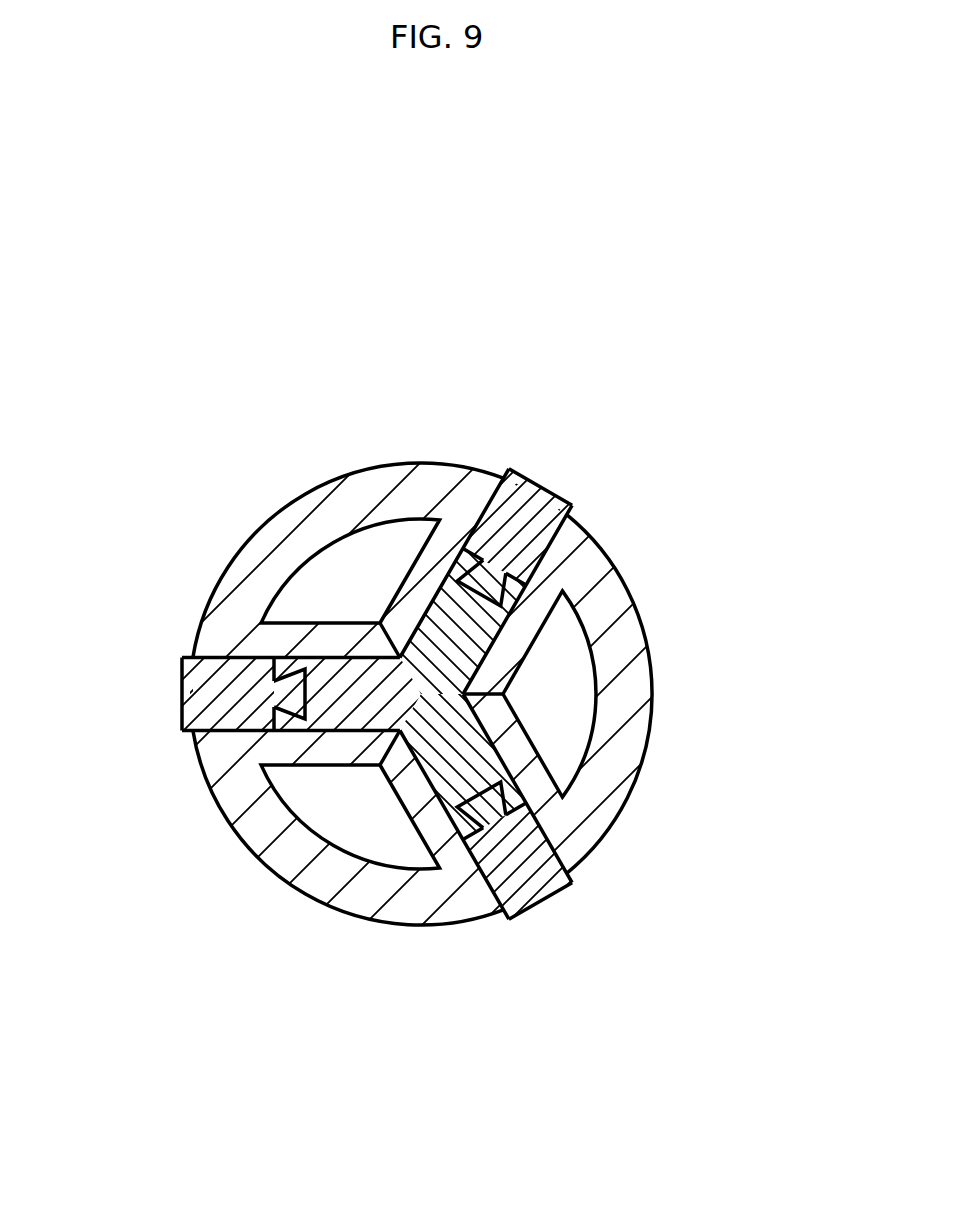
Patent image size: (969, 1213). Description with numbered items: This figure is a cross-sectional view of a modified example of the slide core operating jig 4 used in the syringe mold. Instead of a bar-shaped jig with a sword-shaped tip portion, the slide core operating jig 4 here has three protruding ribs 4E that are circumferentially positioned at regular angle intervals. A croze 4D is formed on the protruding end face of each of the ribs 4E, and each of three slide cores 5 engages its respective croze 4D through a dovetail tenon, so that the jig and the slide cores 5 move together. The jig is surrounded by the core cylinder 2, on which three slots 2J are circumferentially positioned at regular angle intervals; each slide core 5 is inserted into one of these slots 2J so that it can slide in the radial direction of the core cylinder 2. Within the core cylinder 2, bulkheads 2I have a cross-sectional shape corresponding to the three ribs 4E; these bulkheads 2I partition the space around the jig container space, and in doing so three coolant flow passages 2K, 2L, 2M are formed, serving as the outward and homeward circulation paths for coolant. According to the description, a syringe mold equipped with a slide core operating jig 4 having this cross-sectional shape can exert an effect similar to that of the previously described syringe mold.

The core cylinder 2 is at (426, 720).
The bulkhead 2I is at (528, 737).
The slot 2J is at (549, 537).
The coolant flow passage 2K is at (350, 813).
The coolant flow passage 2L is at (562, 693).
The coolant flow passage 2M is at (355, 583).
The slide core operating jig 4 is at (427, 670).
The croze 4D is at (442, 578).
The protruding rib 4E is at (332, 657).
The slide core 5 is at (548, 490).